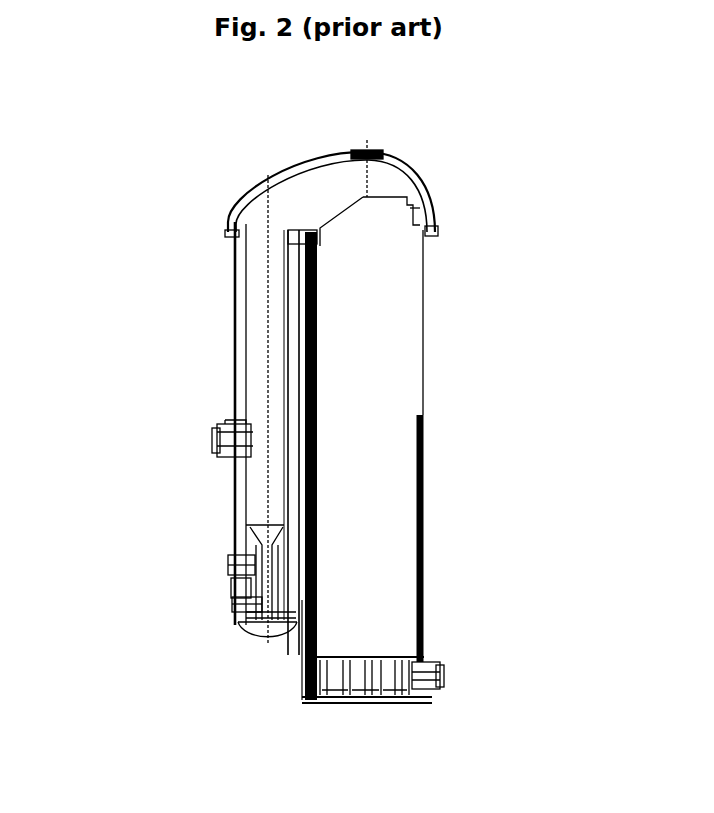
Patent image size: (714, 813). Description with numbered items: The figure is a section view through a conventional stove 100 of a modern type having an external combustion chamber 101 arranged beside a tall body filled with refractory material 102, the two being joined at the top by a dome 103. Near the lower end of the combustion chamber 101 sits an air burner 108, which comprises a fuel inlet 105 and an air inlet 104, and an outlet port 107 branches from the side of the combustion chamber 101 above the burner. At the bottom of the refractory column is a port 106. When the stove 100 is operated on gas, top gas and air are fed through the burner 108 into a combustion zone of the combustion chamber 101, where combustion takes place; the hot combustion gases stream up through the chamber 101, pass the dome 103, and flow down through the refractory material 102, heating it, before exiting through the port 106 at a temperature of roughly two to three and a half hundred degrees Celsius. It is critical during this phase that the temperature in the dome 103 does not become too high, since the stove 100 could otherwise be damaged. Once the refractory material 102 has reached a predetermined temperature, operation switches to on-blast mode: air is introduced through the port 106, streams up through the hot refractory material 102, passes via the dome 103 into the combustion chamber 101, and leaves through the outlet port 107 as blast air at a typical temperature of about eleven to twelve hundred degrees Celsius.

The stove 100 is at (133, 150).
The external combustion chamber 101 is at (265, 327).
The refractory material 102 is at (400, 447).
The dome 103 is at (323, 192).
The air inlet 104 is at (228, 570).
The fuel inlet 105 is at (230, 600).
The port 106 is at (441, 674).
The outlet port 107 is at (215, 437).
The air burner 108 is at (222, 550).